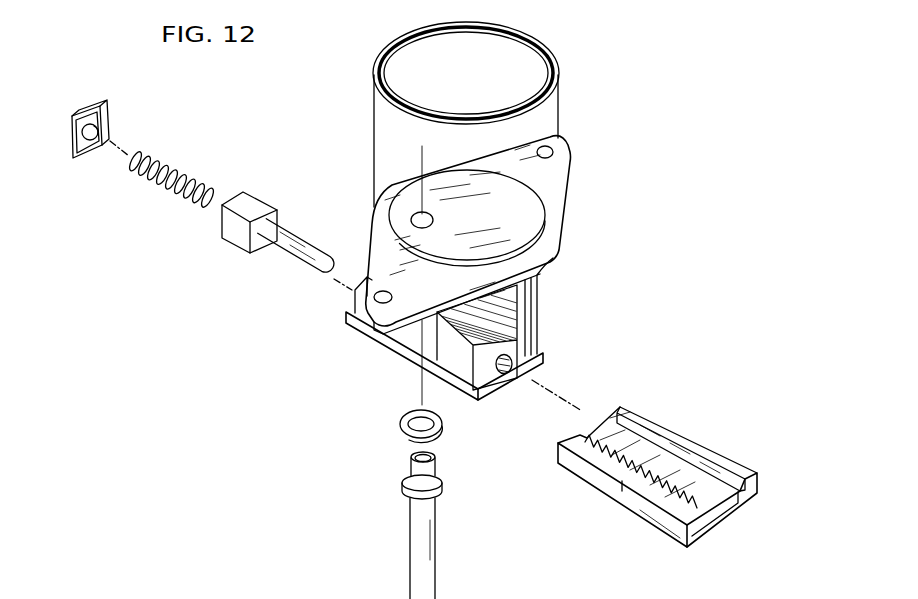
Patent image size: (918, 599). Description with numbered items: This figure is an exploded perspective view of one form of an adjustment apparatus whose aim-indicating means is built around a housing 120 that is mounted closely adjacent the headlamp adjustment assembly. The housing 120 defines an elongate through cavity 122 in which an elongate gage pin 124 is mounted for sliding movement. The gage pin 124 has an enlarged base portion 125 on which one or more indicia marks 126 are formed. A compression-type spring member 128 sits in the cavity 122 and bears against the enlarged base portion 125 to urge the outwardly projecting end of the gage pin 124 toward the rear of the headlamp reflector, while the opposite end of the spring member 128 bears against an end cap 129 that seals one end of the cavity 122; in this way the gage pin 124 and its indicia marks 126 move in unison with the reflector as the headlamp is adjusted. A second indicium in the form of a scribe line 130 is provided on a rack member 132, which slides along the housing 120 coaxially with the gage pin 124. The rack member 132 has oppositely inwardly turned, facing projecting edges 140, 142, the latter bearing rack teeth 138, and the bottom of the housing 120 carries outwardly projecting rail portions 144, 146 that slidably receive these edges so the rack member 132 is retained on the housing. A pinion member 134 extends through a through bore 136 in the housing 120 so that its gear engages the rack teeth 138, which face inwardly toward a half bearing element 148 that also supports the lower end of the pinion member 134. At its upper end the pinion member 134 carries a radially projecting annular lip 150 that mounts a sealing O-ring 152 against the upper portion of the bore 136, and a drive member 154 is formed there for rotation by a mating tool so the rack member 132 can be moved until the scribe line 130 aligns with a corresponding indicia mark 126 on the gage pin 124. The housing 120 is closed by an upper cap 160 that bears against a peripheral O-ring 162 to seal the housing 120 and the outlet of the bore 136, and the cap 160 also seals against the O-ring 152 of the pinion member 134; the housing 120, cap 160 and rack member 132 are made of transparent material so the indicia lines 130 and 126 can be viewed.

The housing 120 is at (413, 173).
The cavity 122 is at (513, 384).
The gage pin 124 is at (292, 243).
The enlarged base portion 125 is at (255, 219).
The indicia marks 126 is at (230, 242).
The spring member 128 is at (181, 174).
The end cap 129 is at (82, 109).
The scribe line 130 is at (688, 480).
The rack member 132 is at (668, 528).
The pinion member 134 is at (428, 550).
The through bore 136 is at (411, 220).
The rack teeth 138 is at (593, 443).
The projecting edge 140 is at (733, 464).
The projecting edge 142 is at (645, 480).
The mounting rail portion 144 is at (538, 358).
The mounting rail portion 146 is at (467, 396).
The half bearing element 148 is at (397, 357).
The annular lip 150 is at (425, 482).
The O-ring 152 is at (400, 430).
The drive member 154 is at (410, 461).
The cap 160 is at (530, 222).
The O-ring 162 is at (561, 62).